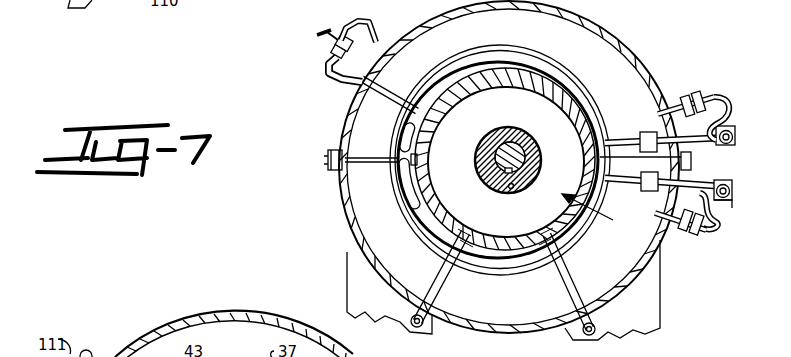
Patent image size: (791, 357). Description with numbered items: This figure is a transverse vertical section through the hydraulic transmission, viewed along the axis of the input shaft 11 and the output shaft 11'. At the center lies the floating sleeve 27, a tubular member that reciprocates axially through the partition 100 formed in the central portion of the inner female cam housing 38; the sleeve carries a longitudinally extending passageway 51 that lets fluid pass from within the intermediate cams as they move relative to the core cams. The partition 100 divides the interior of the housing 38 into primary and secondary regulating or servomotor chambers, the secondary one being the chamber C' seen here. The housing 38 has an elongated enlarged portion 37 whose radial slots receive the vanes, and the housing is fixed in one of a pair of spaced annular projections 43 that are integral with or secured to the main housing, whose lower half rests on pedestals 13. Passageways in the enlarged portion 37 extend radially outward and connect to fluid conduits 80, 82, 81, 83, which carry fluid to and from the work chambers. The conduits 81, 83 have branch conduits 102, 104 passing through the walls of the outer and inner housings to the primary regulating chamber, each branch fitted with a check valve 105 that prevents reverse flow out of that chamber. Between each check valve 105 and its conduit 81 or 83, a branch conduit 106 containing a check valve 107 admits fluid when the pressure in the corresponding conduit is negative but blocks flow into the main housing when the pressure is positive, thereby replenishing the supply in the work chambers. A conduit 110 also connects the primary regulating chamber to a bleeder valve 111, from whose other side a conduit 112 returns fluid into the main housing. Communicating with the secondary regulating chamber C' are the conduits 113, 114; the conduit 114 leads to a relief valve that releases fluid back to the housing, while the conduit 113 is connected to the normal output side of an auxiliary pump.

The annular projection 43 is at (458, 39).
The enlarged portion 37 is at (506, 45).
The fluid conduit 82 is at (564, 78).
The inner female cam housing 38 is at (466, 88).
The partition 100 is at (518, 225).
The floating sleeve 27 is at (514, 135).
The output shaft 11' is at (530, 159).
The input shaft 11 is at (537, 178).
The passageway 51 is at (514, 188).
The fluid conduit 80 is at (423, 237).
The conduit 110 is at (360, 71).
The bleeder valve 111 is at (337, 31).
The conduit 112 is at (362, 26).
The conduit 114 is at (438, 284).
The conduit 113 is at (570, 275).
The pedestal 13 is at (348, 270).
The check valve 105 is at (650, 133).
The branch conduit 104 is at (706, 142).
The fluid conduit 83 is at (732, 127).
The branch conduit 102 is at (722, 182).
The fluid conduit 81 is at (731, 205).
The branch conduit 106 is at (720, 102).
The check valve 107 is at (688, 96).
The secondary regulating chamber C' is at (597, 211).